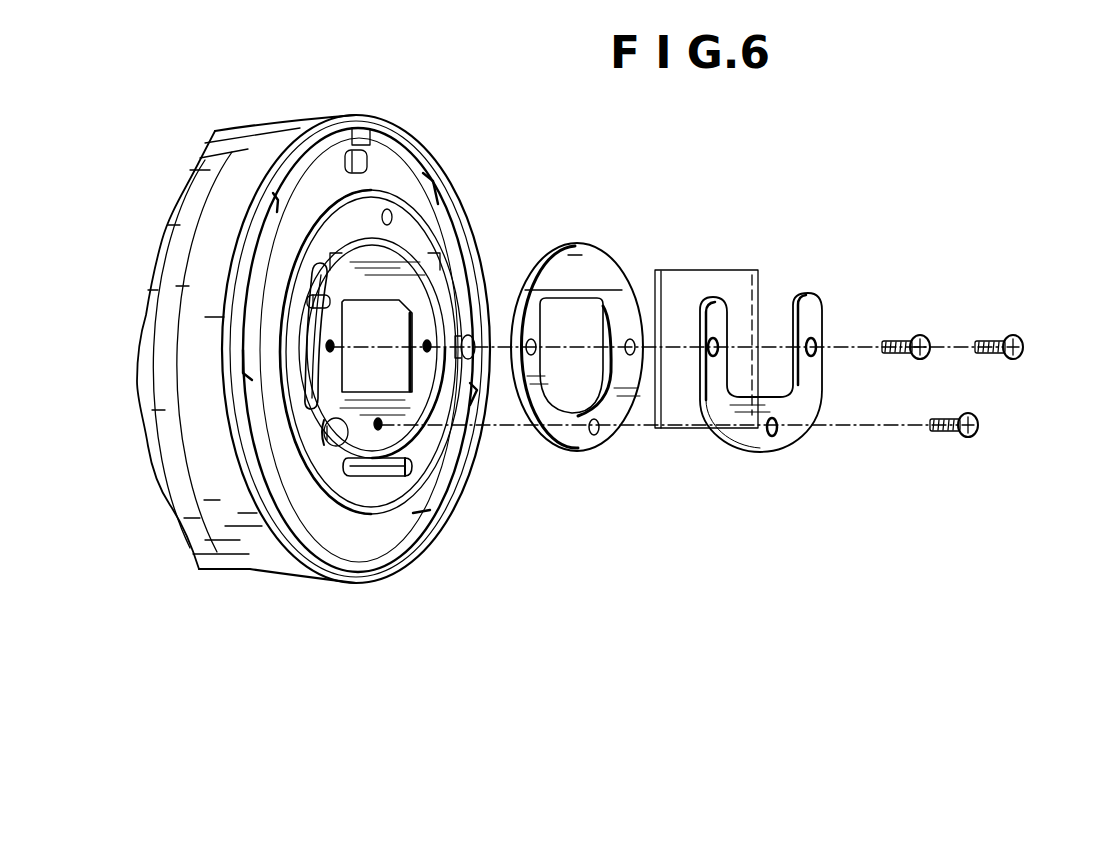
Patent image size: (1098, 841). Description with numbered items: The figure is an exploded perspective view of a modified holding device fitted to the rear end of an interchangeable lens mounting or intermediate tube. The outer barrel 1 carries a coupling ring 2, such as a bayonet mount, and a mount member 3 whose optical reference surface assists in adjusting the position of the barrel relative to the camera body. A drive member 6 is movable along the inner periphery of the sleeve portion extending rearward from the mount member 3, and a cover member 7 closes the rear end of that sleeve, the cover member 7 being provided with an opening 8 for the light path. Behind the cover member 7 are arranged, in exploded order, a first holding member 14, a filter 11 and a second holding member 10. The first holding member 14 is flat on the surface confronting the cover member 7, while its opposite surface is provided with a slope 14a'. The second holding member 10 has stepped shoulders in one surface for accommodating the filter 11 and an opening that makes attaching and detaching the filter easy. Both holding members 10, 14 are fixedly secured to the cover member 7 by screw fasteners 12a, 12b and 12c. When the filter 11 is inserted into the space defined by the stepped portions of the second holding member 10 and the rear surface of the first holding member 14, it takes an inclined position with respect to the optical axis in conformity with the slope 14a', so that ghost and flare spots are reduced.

The outer barrel 1 is at (287, 133).
The coupling ring 2 is at (442, 202).
The mount member 3 is at (390, 520).
The drive member 6 is at (397, 478).
The cover member 7 is at (427, 452).
The opening 8 is at (373, 332).
The second holding member 10 is at (778, 443).
The filter 11 is at (712, 278).
The screw fastener 12a is at (921, 336).
The screw fastener 12b is at (1024, 342).
The screw fastener 12c is at (980, 423).
The first holding member 14 is at (600, 442).
The slope 14a' is at (605, 402).